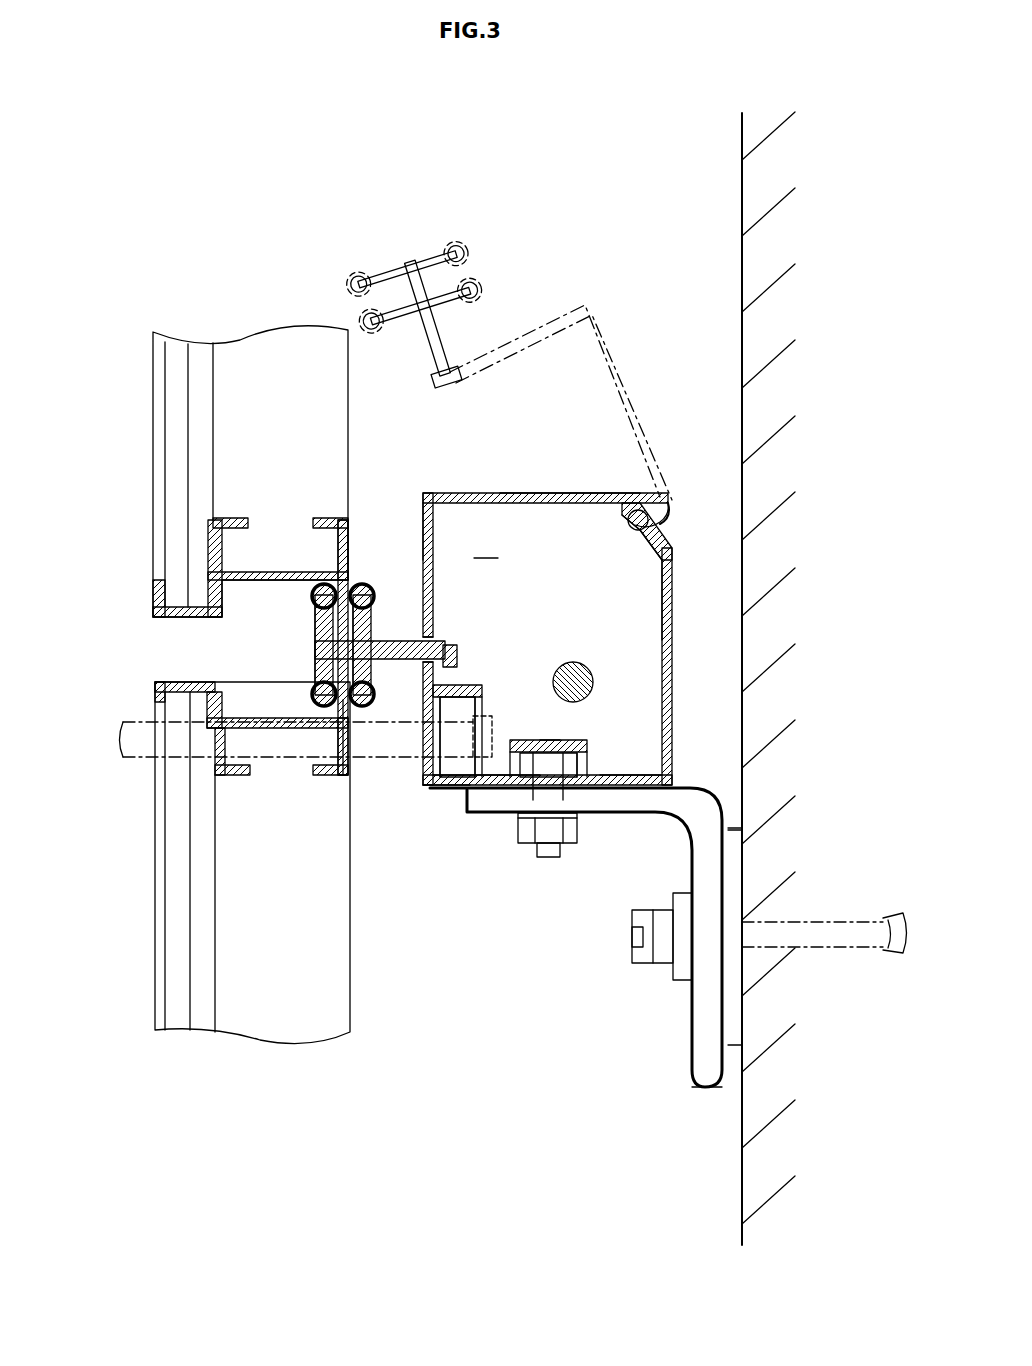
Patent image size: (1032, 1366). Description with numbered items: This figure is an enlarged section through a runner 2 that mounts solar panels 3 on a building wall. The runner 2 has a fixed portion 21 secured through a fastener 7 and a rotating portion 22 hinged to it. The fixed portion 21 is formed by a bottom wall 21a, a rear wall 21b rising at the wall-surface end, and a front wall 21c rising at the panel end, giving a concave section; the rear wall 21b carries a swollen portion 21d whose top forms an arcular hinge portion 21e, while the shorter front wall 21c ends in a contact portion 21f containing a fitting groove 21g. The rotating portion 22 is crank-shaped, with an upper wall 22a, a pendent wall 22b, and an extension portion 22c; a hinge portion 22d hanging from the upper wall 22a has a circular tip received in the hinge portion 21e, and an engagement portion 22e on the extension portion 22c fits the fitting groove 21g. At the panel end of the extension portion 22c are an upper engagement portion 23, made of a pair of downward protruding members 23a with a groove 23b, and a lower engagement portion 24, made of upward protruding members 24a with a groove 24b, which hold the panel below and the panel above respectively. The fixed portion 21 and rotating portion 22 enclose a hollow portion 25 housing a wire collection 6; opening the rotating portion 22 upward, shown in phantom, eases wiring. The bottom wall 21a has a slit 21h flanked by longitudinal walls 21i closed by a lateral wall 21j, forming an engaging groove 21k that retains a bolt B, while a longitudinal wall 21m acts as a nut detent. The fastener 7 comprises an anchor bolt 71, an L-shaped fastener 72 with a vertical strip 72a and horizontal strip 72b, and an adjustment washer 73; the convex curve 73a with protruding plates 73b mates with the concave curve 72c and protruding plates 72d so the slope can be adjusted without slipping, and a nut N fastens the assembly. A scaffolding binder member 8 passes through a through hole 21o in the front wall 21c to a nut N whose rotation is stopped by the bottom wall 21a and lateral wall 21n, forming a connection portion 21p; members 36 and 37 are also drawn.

The runner 2 is at (574, 462).
The solar panel 3 is at (148, 368).
The wire collection 6 is at (585, 668).
The fastener 7 is at (672, 1073).
The scaffolding binder member 8 is at (123, 745).
The fixed portion 21 is at (675, 665).
The bottom wall 21a is at (625, 775).
The rear wall 21b is at (672, 590).
The front wall 21c is at (463, 785).
The swollen portion 21d is at (622, 545).
The hinge portion 21e is at (630, 515).
The contact portion 21f is at (374, 700).
The fitting groove 21g is at (437, 640).
The slit 21h is at (548, 810).
The longitudinal walls 21i is at (520, 745).
The lateral wall 21j is at (545, 752).
The engaging groove 21k is at (585, 790).
The longitudinal wall 21m is at (512, 790).
The lateral wall 21n is at (470, 690).
The through hole 21o is at (440, 790).
The connection portion 21p is at (518, 800).
The rotating portion 22 is at (630, 380).
The upper wall 22a is at (590, 493).
The pendent wall 22b is at (428, 525).
The extension portion 22c is at (400, 641).
The hinge portion 22d is at (660, 510).
The engagement portion 22e is at (452, 655).
The upper engagement portion 23 is at (313, 660).
The protruding members 23a is at (322, 706).
The groove 23b is at (318, 688).
The lower engagement portion 24 is at (313, 633).
The protruding members 24a is at (320, 585).
The groove 24b is at (318, 620).
The hollow portion 25 is at (486, 547).
The support plate 36 is at (343, 700).
The support plate 37 is at (341, 588).
The anchor bolt 71 is at (830, 930).
The fastener 72 is at (710, 1082).
The vertical strip 72a is at (705, 985).
The horizontal strip 72b is at (690, 790).
The concave curve 72c is at (720, 1015).
The protruding plates 72d is at (720, 1015).
The adjustment washer 73 is at (735, 866).
The convex curve 73a is at (705, 957).
The protruding plates 73b is at (760, 975).
The bolt B is at (560, 790).
The nut N is at (640, 936).